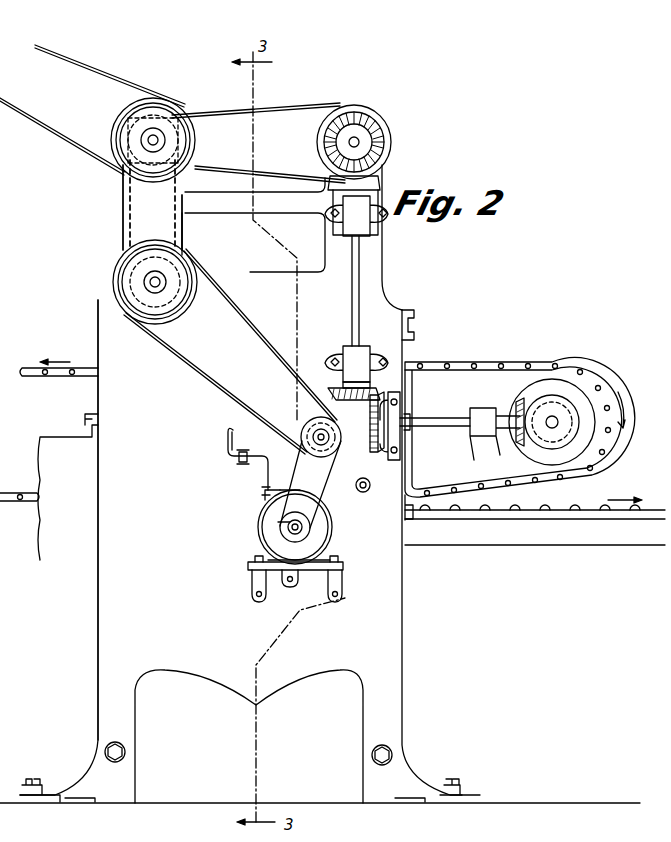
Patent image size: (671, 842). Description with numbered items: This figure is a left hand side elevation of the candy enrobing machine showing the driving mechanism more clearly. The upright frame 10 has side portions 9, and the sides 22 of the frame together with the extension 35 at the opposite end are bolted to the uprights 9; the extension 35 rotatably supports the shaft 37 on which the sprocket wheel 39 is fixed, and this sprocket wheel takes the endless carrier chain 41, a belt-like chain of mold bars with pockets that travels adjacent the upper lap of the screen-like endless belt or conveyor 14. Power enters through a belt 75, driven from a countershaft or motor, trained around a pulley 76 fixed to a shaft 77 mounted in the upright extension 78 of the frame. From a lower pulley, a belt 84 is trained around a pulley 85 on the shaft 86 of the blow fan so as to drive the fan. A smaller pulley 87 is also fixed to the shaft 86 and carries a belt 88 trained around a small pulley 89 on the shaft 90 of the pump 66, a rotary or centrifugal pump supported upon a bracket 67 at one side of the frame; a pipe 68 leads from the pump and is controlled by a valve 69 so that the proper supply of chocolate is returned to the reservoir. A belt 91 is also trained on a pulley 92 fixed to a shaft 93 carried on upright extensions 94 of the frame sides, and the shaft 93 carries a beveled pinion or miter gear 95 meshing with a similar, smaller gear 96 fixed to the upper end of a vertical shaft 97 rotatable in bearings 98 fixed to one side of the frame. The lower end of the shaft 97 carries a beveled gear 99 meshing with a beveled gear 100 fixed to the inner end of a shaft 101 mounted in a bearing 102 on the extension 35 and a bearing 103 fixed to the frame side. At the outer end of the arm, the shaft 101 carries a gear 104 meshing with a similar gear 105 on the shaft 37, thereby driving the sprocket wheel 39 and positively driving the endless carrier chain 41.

The side portions 9 is at (320, 481).
The frame 10 is at (96, 620).
The endless belt or conveyor 14 is at (495, 517).
The upward extension of frame side 22 is at (68, 487).
The extension 35 is at (407, 429).
The shaft 37 is at (555, 432).
The sprocket wheel 39 is at (572, 382).
The endless carrier chain 41 is at (13, 488).
The pump 66 is at (262, 532).
The bracket 67 is at (280, 572).
The pipe 68 is at (226, 445).
The valve 69 is at (240, 462).
The belt 75 is at (58, 108).
The pulley 76 is at (178, 112).
The shaft 77 is at (155, 136).
The upright extension 78 is at (152, 205).
The belt 84 is at (180, 355).
The pulley 85 is at (312, 425).
The shaft 86 is at (356, 398).
The smaller pulley 87 is at (336, 460).
The belt 88 is at (300, 462).
The small pulley 89 is at (282, 518).
The shaft 90 is at (304, 534).
The belt 91 is at (278, 112).
The pulley 92 is at (385, 118).
The shaft 93 is at (360, 141).
The upright extensions 94 is at (380, 194).
The beveled pinion or miter gear 95 is at (356, 115).
The gear 96 is at (378, 176).
The shaft 97 is at (358, 265).
The bearings 98 is at (348, 353).
The beveled gear 99 is at (340, 380).
The beveled gear 100 is at (408, 368).
The shaft 101 is at (430, 420).
The bearing 102 is at (480, 408).
The bearing 103 is at (392, 420).
The gear 104 is at (522, 400).
The gear 105 is at (566, 410).